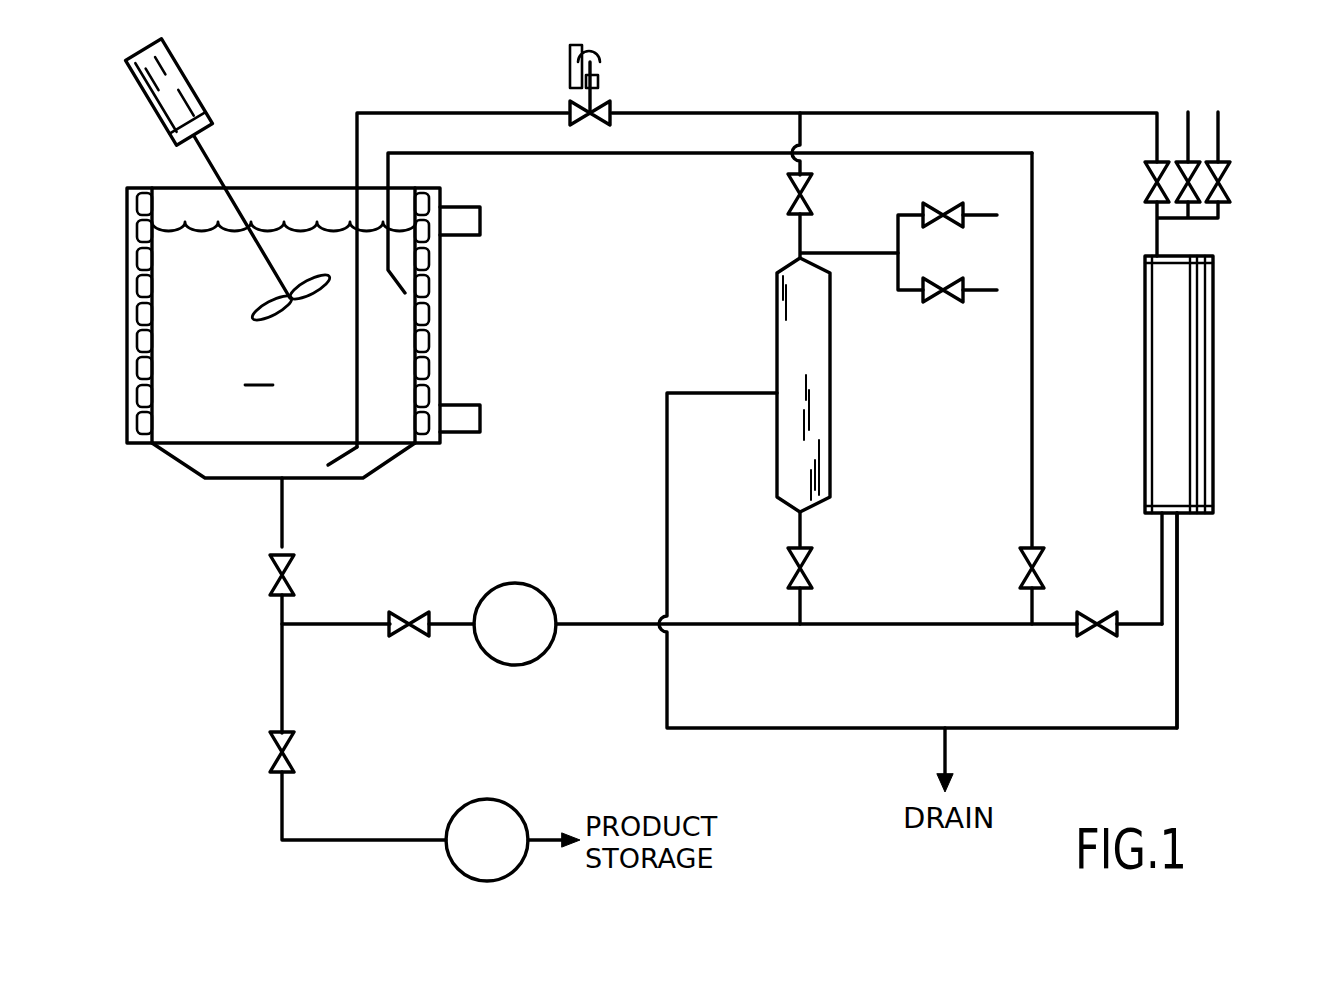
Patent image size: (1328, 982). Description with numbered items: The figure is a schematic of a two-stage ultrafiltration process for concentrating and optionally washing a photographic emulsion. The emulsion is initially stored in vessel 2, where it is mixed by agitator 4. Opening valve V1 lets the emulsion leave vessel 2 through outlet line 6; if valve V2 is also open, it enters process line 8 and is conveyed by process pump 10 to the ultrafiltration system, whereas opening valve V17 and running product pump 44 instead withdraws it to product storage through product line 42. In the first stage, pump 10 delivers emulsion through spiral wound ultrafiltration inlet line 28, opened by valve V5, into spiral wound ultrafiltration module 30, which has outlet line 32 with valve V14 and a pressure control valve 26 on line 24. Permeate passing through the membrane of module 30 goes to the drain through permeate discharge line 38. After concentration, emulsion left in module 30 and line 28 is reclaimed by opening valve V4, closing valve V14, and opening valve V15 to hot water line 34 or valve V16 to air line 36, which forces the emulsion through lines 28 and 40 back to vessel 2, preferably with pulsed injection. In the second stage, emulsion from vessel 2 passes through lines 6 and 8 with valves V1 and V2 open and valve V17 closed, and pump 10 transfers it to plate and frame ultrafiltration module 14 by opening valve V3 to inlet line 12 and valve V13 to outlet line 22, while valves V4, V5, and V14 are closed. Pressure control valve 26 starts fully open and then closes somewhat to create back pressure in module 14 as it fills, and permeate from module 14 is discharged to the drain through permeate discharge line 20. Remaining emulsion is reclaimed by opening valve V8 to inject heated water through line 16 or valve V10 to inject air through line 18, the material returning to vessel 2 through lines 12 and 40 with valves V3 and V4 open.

The vessel 2 is at (450, 346).
The agitator 4 is at (198, 100).
The outlet line 6 is at (284, 531).
The process line 8 is at (340, 627).
The process pump 10 is at (552, 600).
The inlet line 12 is at (803, 612).
The plate and frame ultrafiltration module 14 is at (826, 428).
The heated water line 16 is at (978, 215).
The air line 18 is at (978, 290).
The permeate discharge line 20 is at (745, 394).
The outlet line 22 is at (803, 250).
The line 24 is at (520, 112).
The pressure control valve 26 is at (598, 68).
The spiral wound ultrafiltration inlet line 28 is at (1162, 540).
The spiral wound ultrafiltration module 30 is at (1145, 400).
The outlet line 32 is at (1156, 218).
The hot water line 34 is at (1188, 116).
The air line 36 is at (1218, 118).
The permeate discharge line 38 is at (1180, 628).
The line 40 is at (1032, 278).
The product line 42 is at (284, 708).
The product pump 44 is at (508, 803).
The valve V1 is at (290, 575).
The valve V2 is at (404, 614).
The valve V3 is at (811, 565).
The valve V4 is at (1030, 560).
The valve V5 is at (1098, 634).
The valve V8 is at (943, 206).
The valve V10 is at (944, 300).
The valve V13 is at (812, 194).
The valve V14 is at (1152, 178).
The valve V15 is at (1196, 172).
The valve V16 is at (1226, 190).
The valve V17 is at (290, 752).